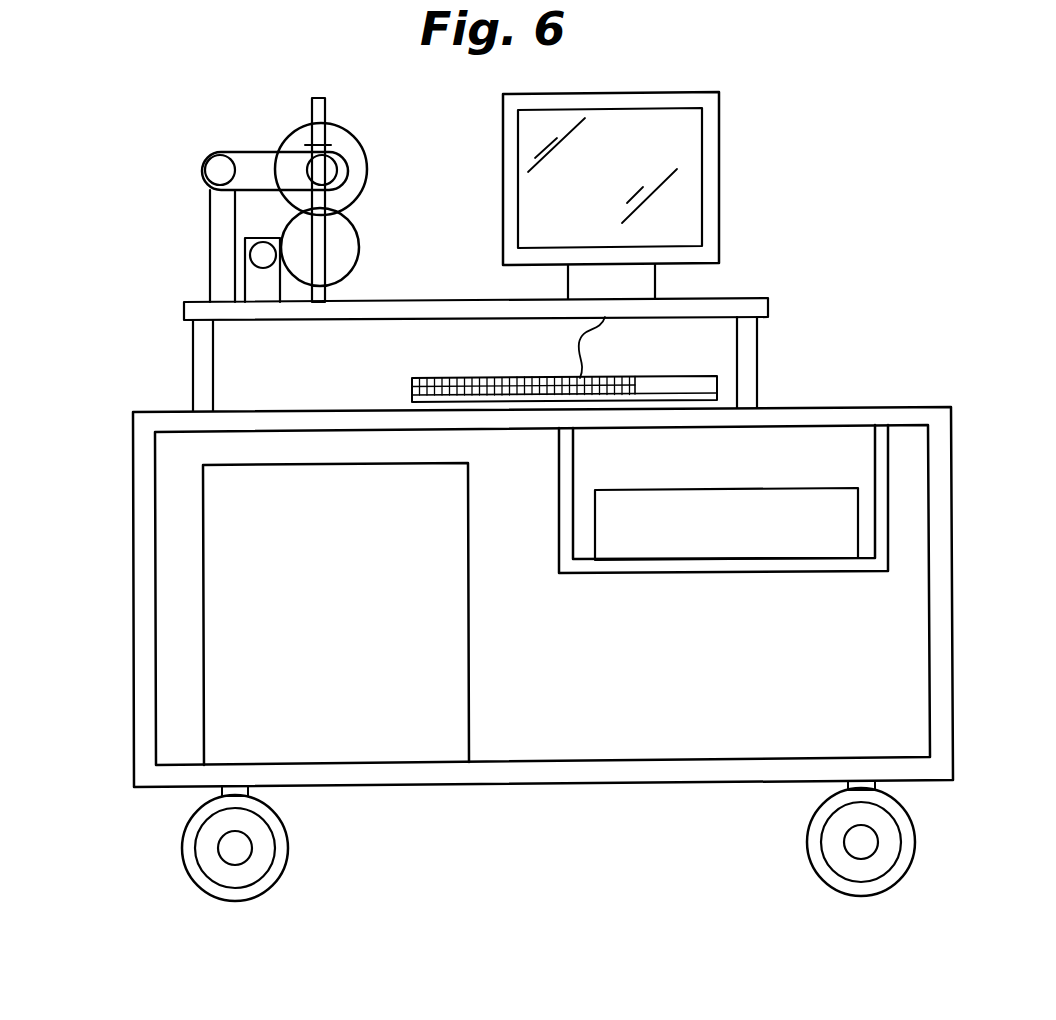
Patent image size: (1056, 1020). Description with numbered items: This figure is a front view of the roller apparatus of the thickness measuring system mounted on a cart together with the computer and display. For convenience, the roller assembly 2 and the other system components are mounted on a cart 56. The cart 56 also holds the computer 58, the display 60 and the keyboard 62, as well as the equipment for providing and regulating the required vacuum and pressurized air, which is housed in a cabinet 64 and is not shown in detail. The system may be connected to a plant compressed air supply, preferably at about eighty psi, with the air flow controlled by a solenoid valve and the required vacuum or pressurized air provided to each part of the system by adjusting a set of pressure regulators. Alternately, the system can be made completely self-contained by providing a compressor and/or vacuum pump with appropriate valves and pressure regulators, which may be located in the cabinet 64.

The roller assembly 2 is at (221, 134).
The cart 56 is at (935, 613).
The computer 58 is at (837, 515).
The display 60 is at (683, 138).
The keyboard 62 is at (688, 382).
The cabinet 64 is at (227, 563).